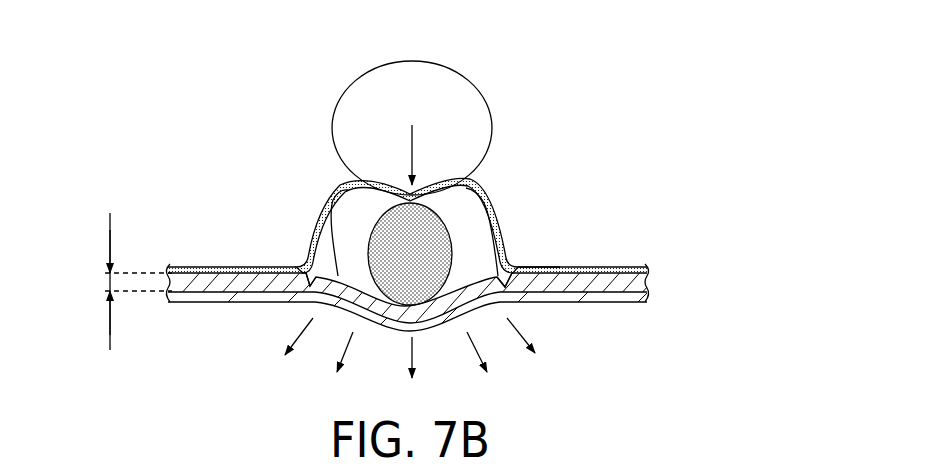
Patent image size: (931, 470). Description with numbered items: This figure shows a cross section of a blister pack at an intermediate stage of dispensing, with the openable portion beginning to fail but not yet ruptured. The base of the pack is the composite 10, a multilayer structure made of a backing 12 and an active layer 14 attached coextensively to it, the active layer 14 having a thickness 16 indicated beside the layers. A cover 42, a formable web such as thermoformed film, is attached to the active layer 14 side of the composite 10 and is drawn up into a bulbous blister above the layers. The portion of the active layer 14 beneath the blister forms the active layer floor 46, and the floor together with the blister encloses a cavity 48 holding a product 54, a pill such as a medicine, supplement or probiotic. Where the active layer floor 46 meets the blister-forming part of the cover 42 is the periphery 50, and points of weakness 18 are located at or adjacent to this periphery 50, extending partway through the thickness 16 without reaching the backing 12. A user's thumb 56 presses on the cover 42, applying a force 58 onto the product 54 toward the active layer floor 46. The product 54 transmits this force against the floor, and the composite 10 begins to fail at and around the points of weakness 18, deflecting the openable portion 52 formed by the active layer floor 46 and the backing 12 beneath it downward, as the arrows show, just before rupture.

The composite 10 is at (658, 283).
The backing 12 is at (217, 297).
The active layer 14 is at (215, 282).
The thickness 16 is at (110, 328).
The points of weakness 18 is at (313, 263).
The cover 42 is at (573, 268).
The active layer floor 46 is at (327, 200).
The cavity 48 is at (343, 197).
The periphery 50 is at (522, 267).
The openable portion 52 is at (476, 308).
The product 54 is at (435, 235).
The thumb 56 is at (415, 70).
The force 58 is at (413, 148).